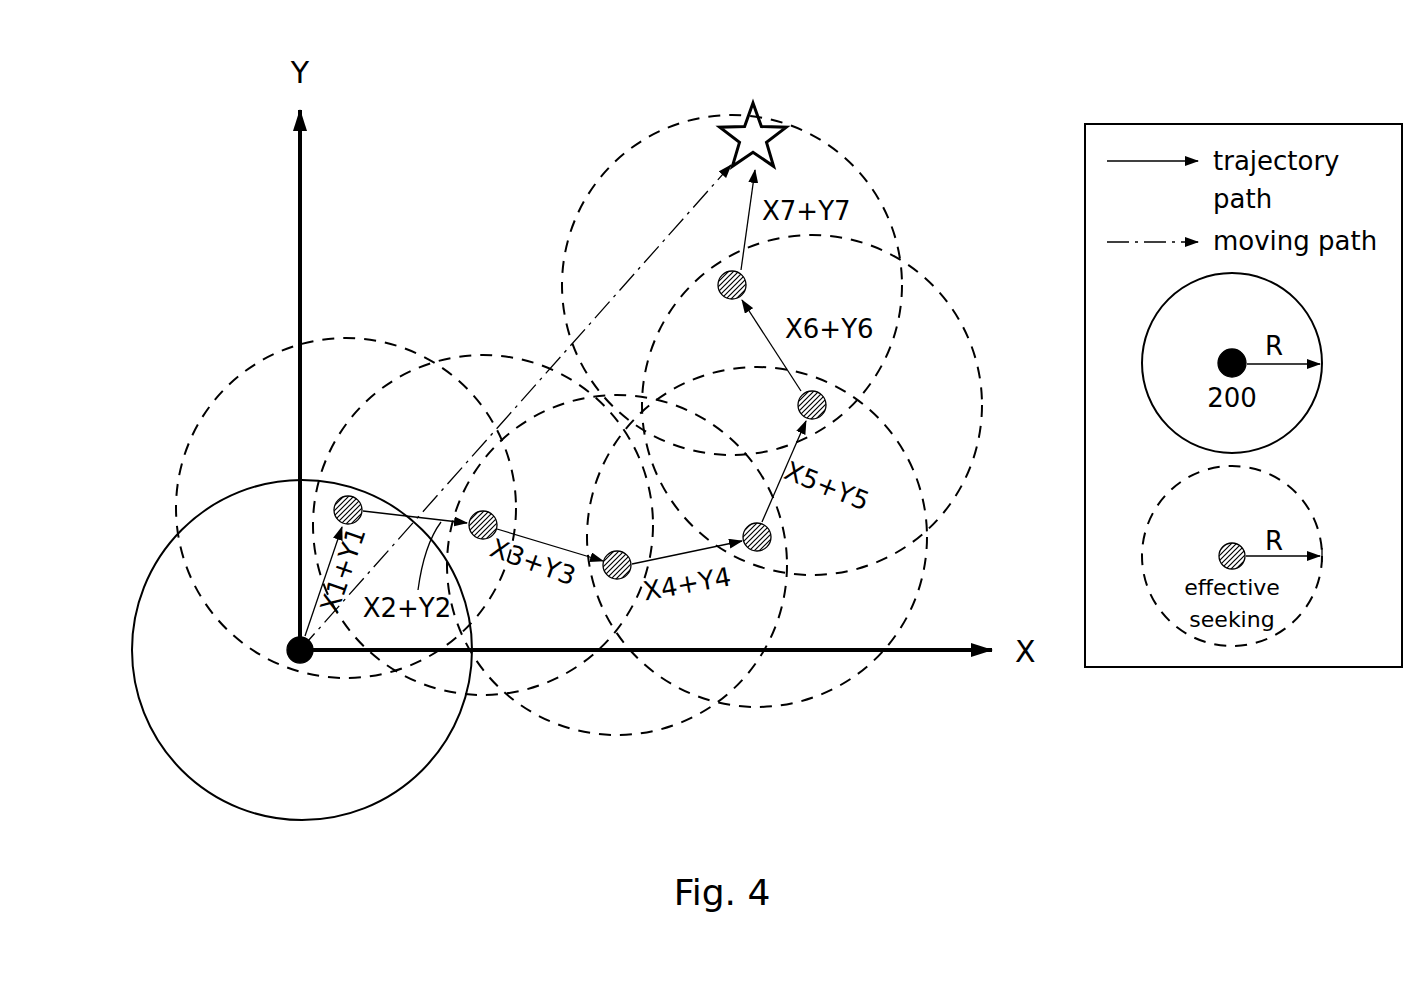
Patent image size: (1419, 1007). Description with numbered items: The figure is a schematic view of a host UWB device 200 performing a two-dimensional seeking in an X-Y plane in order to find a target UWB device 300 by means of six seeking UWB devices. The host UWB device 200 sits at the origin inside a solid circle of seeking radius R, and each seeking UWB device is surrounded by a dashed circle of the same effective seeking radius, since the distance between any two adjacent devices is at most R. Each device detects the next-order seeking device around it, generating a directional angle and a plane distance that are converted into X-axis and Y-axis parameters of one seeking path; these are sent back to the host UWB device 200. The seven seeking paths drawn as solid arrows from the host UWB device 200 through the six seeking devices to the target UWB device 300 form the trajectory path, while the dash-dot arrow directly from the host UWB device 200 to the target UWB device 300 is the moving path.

The host UWB device 200 is at (298, 664).
The target UWB device 300 is at (737, 121).